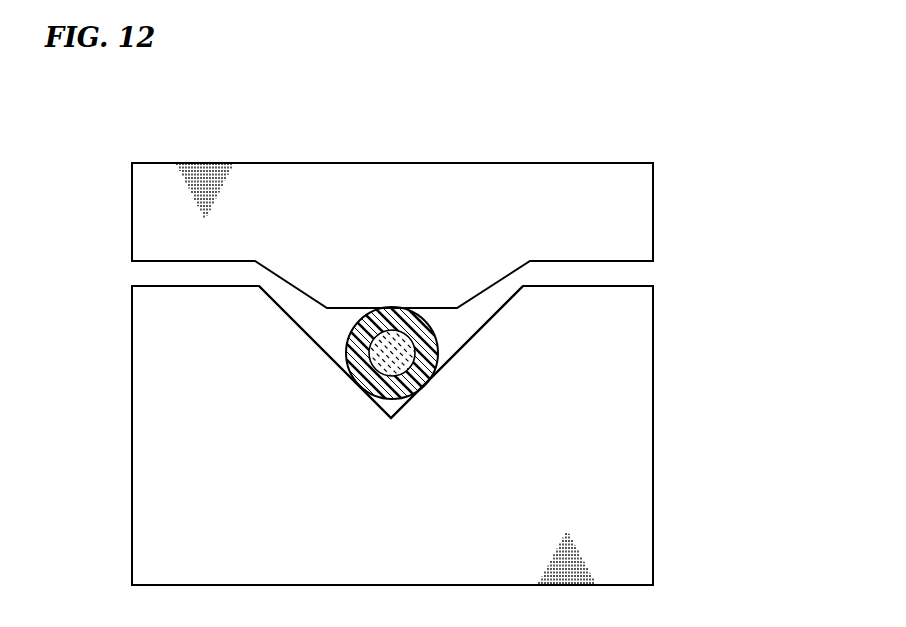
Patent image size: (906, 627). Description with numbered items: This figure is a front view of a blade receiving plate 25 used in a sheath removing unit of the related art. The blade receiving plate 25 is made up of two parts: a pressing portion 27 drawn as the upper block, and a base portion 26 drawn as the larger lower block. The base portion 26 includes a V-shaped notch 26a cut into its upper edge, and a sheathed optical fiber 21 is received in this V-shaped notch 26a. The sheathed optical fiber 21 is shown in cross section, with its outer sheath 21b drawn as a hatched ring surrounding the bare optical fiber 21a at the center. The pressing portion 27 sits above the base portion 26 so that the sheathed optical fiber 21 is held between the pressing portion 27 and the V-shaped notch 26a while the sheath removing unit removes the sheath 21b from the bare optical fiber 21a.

The sheathed optical fiber 21 is at (428, 353).
The bare optical fiber 21a is at (378, 363).
The sheath 21b is at (438, 342).
The blade receiving plate 25 is at (453, 337).
The base portion 26 is at (653, 339).
The V-shaped notch 26a is at (325, 352).
The pressing portion 27 is at (624, 162).